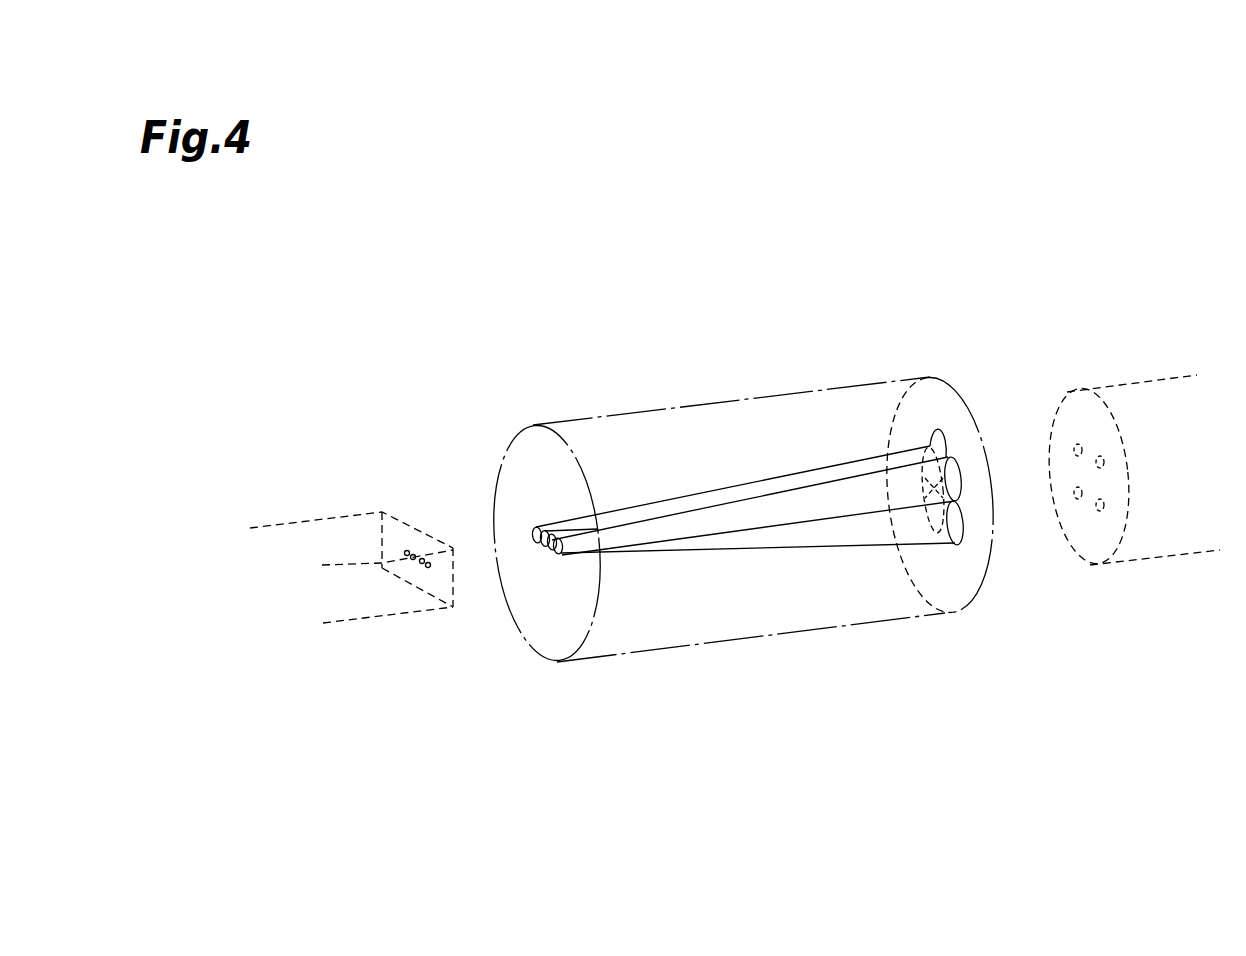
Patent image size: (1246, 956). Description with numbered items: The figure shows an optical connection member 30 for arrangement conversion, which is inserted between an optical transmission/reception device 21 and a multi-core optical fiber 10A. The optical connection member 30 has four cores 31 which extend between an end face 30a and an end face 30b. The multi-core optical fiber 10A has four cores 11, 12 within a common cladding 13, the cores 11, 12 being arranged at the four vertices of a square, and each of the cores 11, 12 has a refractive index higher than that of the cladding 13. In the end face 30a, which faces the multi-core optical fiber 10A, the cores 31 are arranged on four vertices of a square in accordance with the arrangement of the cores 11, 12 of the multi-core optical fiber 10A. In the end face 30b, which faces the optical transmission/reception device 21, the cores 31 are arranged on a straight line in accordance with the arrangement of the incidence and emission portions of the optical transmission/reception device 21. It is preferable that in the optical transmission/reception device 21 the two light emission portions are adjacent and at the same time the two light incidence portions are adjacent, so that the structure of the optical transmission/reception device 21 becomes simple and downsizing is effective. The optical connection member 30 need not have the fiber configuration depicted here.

The multi-core optical fiber 10A is at (1130, 481).
The core 11 is at (1106, 463).
The core 12 is at (1076, 443).
The cladding 13 is at (1088, 566).
The optical transmission/reception device 21 is at (288, 517).
The optical connection member 30 is at (753, 491).
The end face 30a is at (990, 573).
The end face 30b is at (527, 452).
The core 31 is at (562, 558).